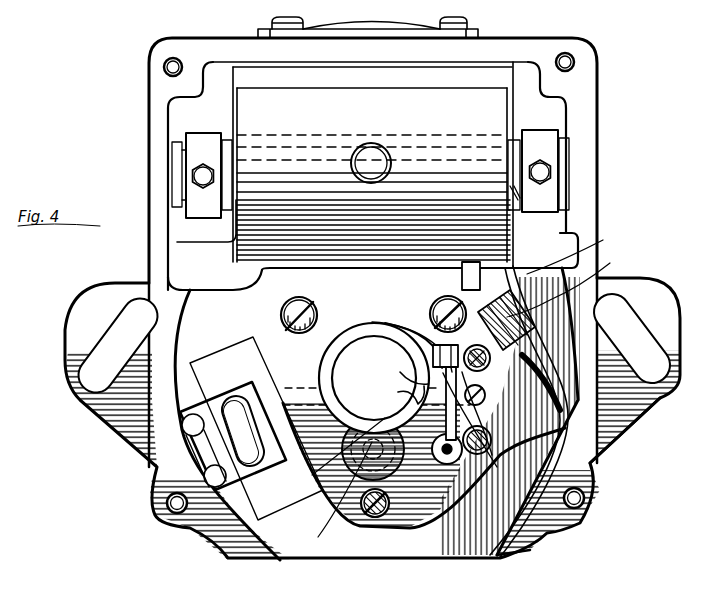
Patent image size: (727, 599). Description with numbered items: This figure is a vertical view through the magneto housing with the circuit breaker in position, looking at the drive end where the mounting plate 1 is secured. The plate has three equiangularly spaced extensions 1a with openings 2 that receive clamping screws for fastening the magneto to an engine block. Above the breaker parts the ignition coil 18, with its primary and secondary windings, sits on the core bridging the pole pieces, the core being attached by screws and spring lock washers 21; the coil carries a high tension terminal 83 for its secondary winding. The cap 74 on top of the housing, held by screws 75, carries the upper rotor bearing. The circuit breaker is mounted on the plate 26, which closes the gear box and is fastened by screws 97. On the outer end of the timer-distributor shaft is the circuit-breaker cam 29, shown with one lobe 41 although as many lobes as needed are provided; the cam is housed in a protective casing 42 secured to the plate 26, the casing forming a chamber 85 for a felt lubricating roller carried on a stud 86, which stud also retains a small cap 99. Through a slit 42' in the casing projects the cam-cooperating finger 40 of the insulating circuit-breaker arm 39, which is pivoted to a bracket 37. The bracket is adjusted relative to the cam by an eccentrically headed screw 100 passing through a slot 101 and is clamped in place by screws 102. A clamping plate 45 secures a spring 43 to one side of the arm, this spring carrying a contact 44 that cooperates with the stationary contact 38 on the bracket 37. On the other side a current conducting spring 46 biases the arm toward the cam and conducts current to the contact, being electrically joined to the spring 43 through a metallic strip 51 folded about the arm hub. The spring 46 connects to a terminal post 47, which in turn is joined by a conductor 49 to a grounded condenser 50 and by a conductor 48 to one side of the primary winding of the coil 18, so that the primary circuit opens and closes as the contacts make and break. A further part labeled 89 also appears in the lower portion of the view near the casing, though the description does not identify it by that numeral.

The mounting plate 1 is at (120, 432).
The extensions 1a is at (643, 407).
The openings 2 is at (127, 313).
The ignition coil 18 is at (473, 97).
The screws and spring lock washers 21 is at (195, 173).
The plate 26 is at (287, 336).
The circuit-breaker cam 29 is at (327, 396).
The bracket 37 is at (487, 390).
The stationary contact 38 is at (442, 332).
The circuit-breaker arm 39 is at (459, 349).
The cam-cooperating finger 40 is at (432, 369).
The lobe 41 is at (415, 374).
The protective casing 42 is at (358, 378).
The slit 42' is at (398, 370).
The spring 43 is at (467, 373).
The contact 44 is at (440, 293).
The clamping plate 45 is at (406, 397).
The current conducting spring 46 is at (500, 473).
The terminal post 47 is at (569, 283).
The conductor 48 is at (574, 253).
The conductor 49 is at (248, 284).
The condenser 50 is at (208, 367).
The metallic strip 51 is at (476, 456).
The cap 74 is at (390, 24).
The screws 75 is at (272, 22).
The high tension terminal 83 is at (380, 162).
The chamber 85 is at (348, 467).
The stud 86 is at (366, 471).
The lever 89 is at (336, 452).
The screws 97 is at (492, 292).
The cap 99 is at (334, 499).
The eccentrically headed screw 100 is at (373, 518).
The slot 101 is at (535, 358).
The screws 102 is at (520, 540).